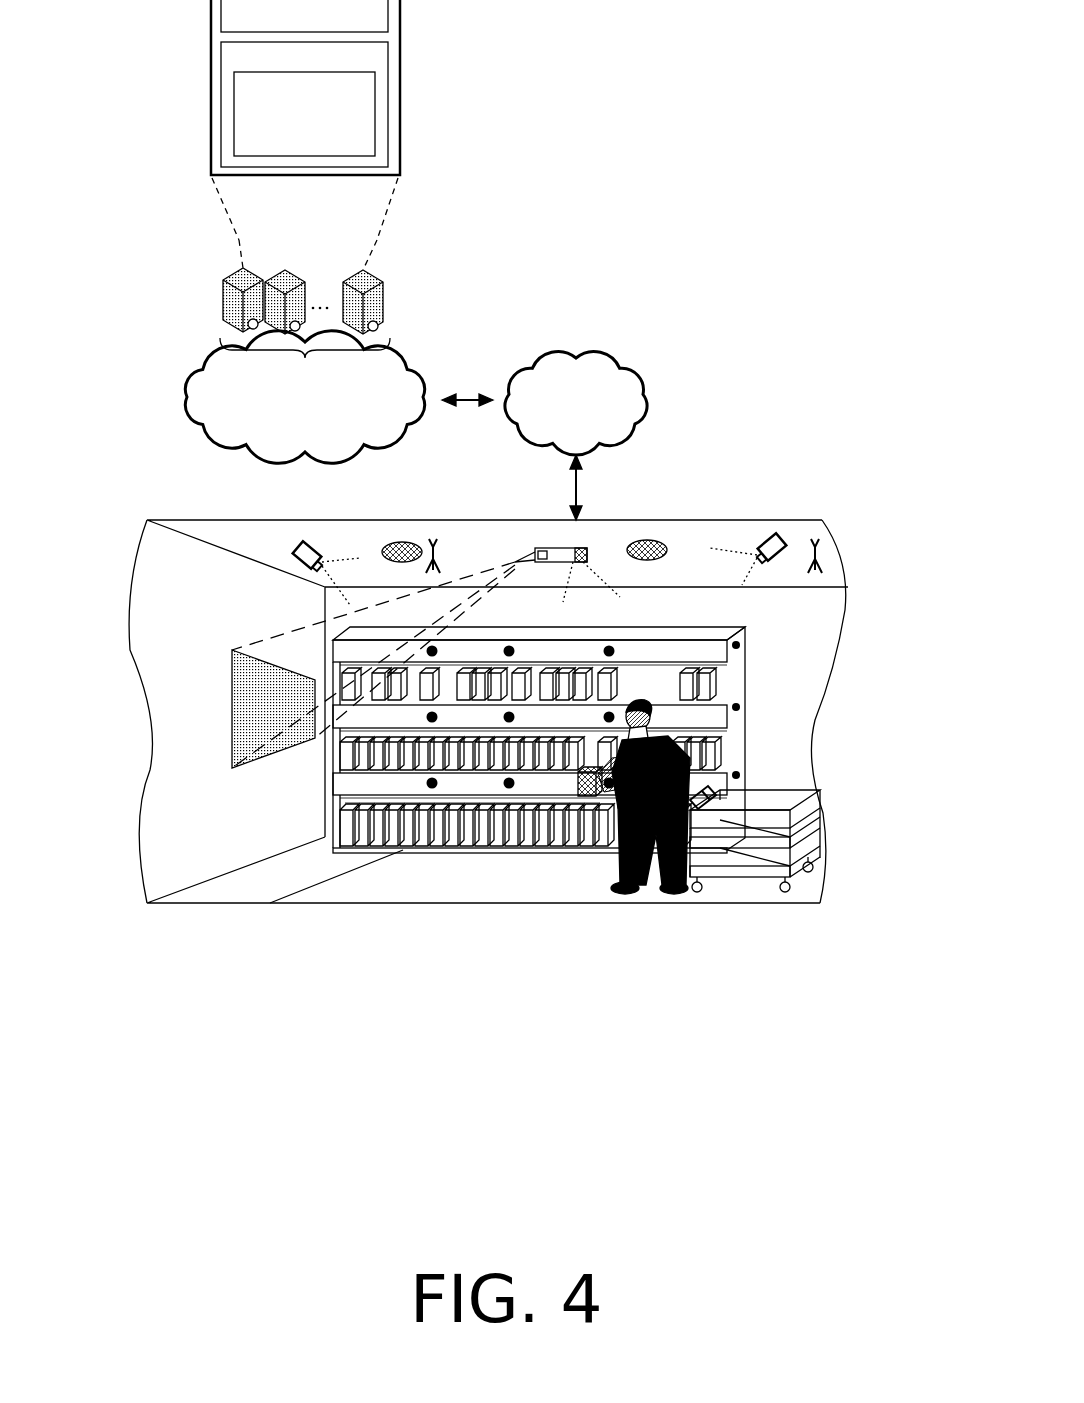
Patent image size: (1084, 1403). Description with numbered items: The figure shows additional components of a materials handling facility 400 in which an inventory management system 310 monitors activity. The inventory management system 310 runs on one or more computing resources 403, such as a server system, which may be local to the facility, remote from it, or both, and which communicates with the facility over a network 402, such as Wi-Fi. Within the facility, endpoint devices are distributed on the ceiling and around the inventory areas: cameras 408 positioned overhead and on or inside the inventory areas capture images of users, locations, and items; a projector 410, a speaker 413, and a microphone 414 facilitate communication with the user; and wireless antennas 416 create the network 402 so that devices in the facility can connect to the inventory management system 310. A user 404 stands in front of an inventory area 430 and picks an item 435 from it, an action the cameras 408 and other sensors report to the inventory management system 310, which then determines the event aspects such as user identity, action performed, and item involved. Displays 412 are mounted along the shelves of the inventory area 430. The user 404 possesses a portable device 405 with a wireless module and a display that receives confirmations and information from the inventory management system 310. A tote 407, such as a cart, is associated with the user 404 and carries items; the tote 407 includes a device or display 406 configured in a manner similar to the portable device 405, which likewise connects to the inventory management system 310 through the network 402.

The inventory management system 310 is at (305, 120).
The computing resource(s) 403 is at (304, 351).
The network 402 is at (544, 436).
The materials handling facility 400 is at (822, 520).
The user 404 is at (620, 850).
The portable device 405 is at (572, 848).
The display 406 is at (710, 787).
The tote 407 is at (810, 792).
The cameras 408 is at (303, 540).
The projectors 410 is at (558, 548).
The displays 412 is at (539, 740).
The speakers 413 is at (648, 540).
The microphones 414 is at (388, 545).
The wireless antennas 416 is at (433, 545).
The inventory area 430 is at (335, 768).
The item 435 is at (588, 768).